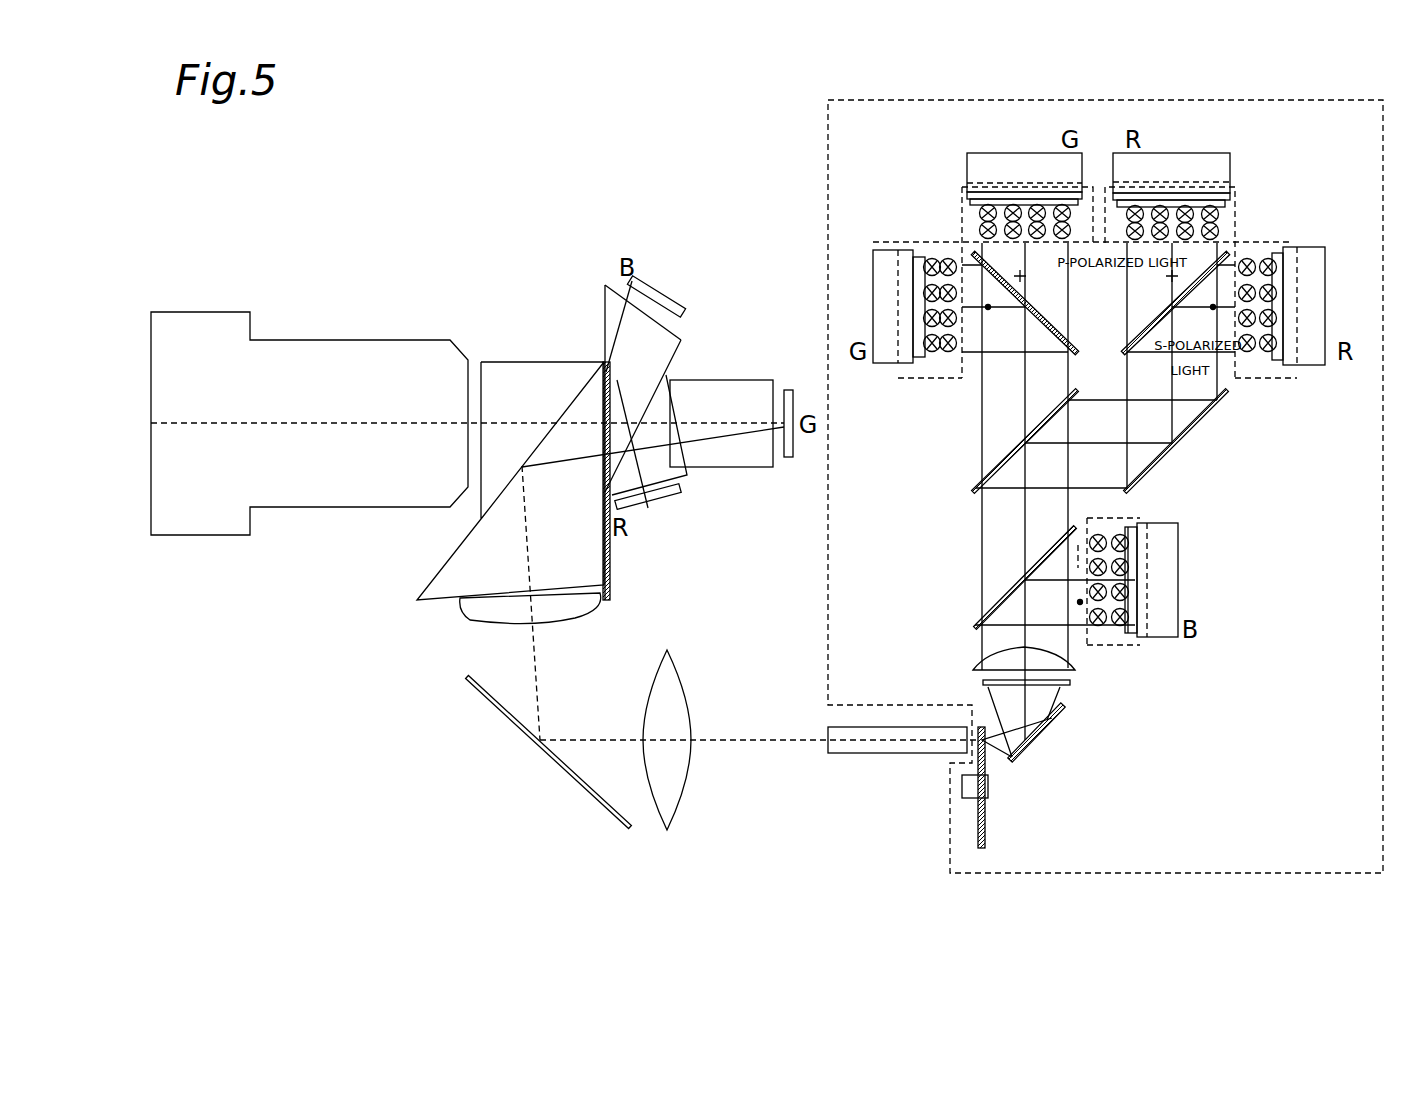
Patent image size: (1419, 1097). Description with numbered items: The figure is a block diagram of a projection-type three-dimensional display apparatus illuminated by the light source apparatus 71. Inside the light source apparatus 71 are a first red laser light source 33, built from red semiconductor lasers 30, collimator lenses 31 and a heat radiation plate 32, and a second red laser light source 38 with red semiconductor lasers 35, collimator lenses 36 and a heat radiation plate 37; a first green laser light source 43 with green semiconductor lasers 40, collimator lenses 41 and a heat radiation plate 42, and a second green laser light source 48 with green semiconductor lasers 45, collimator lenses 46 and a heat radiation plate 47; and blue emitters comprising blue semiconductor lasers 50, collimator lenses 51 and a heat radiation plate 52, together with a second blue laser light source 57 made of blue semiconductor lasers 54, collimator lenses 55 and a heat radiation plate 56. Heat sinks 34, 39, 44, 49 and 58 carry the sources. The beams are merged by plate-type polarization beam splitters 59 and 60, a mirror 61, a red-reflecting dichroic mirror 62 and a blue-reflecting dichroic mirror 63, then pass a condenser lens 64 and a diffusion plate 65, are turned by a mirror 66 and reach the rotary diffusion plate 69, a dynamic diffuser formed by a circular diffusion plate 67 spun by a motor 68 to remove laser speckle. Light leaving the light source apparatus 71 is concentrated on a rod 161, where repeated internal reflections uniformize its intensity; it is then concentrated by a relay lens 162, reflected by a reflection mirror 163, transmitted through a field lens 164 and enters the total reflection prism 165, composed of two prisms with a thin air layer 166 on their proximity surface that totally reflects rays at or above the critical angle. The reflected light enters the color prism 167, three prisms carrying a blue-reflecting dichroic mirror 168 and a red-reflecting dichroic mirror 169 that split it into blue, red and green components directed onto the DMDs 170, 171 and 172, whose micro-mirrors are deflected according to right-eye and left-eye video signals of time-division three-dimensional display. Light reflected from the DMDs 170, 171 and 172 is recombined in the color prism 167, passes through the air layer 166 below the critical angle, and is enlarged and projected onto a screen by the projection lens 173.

The red semiconductor lasers 30 is at (1262, 378).
The collimator lenses 31 is at (1233, 365).
The heat radiation plate 32 is at (1285, 372).
The first red laser light source 33 is at (1305, 370).
The heat sink 34 is at (1326, 262).
The red semiconductor lasers 35 is at (1225, 210).
The collimator lenses 36 is at (1215, 228).
The heat radiation plate 37 is at (1230, 196).
The second red laser light source 38 is at (1216, 182).
The heat sink 39 is at (1175, 152).
The green semiconductor lasers 40 is at (930, 362).
The collimator lenses 41 is at (948, 357).
The heat radiation plate 42 is at (921, 366).
The first green laser light source 43 is at (896, 370).
The heat sink 44 is at (874, 296).
The green semiconductor lasers 45 is at (966, 205).
The collimator lenses 46 is at (984, 228).
The heat radiation plate 47 is at (968, 196).
The second green laser light source 48 is at (972, 185).
The heat sink 49 is at (1020, 152).
The blue semiconductor lasers 50 is at (1122, 635).
The collimator lenses 51 is at (1105, 632).
The heat radiation plate 52 is at (1114, 650).
The blue semiconductor lasers 54 is at (1165, 532).
The collimator lenses 55 is at (1096, 535).
The heat radiation plate 56 is at (1133, 530).
The second blue laser light source 57 is at (1146, 560).
The heat sink 58 is at (1180, 598).
The plate-type polarization beam splitter 59 is at (1132, 322).
The plate-type polarization beam splitter 60 is at (1070, 350).
The mirror 61 is at (1167, 455).
The red-reflecting dichroic mirror 62 is at (975, 486).
The blue-reflecting dichroic mirror 63 is at (974, 618).
The condenser lens 64 is at (974, 662).
The diffusion plate 65 is at (985, 683).
The mirror 66 is at (1040, 748).
The circular diffusion plate 67 is at (988, 815).
The motor 68 is at (990, 788).
The rotary diffusion plate 69 is at (1060, 845).
The light source apparatus 71 is at (1172, 98).
The rod 161 is at (848, 755).
The relay lens 162 is at (688, 797).
The reflection mirror 163 is at (562, 772).
The field lens 164 is at (608, 598).
The total reflection prism 165 is at (440, 570).
The air layer 166 is at (566, 400).
The color prism 167 is at (723, 455).
The blue-reflecting dichroic mirror 168 is at (678, 370).
The red-reflecting dichroic mirror 169 is at (674, 404).
The DMD 170 is at (650, 283).
The DMD 171 is at (645, 515).
The DMD 172 is at (790, 388).
The projection lens 173 is at (300, 340).